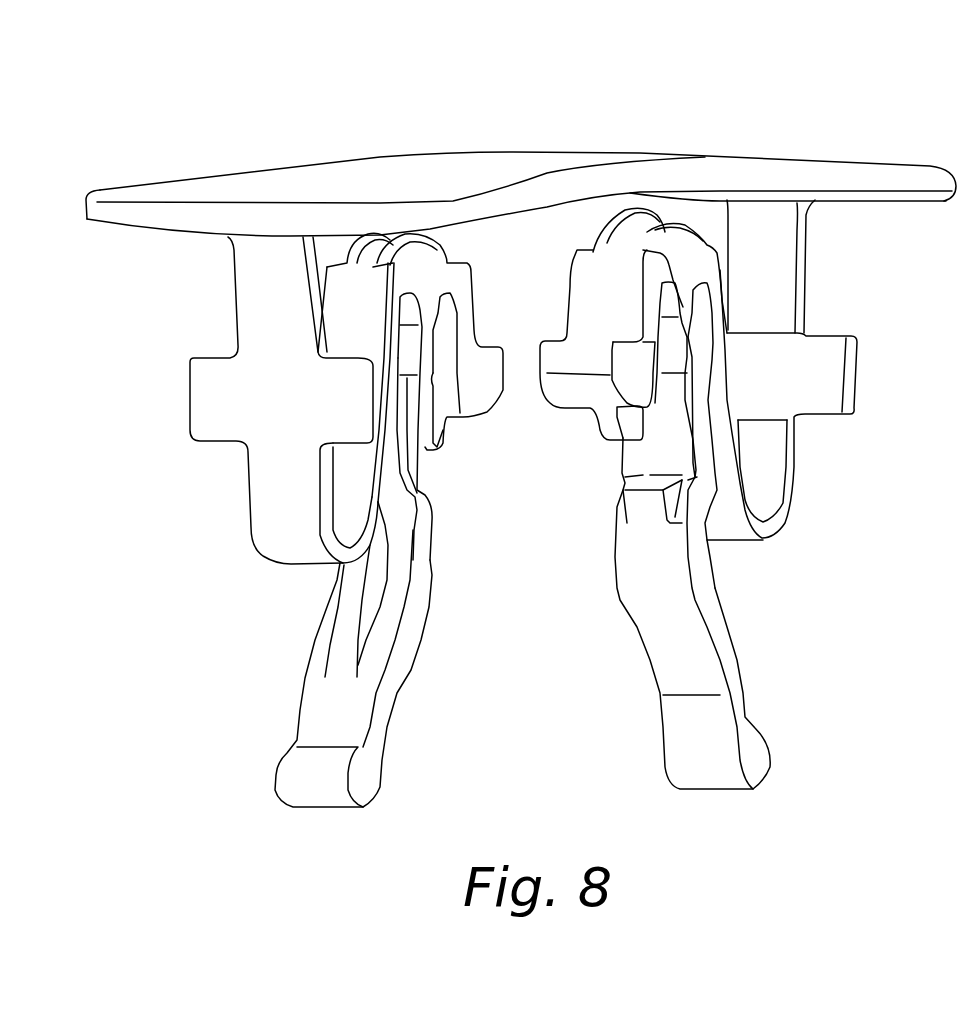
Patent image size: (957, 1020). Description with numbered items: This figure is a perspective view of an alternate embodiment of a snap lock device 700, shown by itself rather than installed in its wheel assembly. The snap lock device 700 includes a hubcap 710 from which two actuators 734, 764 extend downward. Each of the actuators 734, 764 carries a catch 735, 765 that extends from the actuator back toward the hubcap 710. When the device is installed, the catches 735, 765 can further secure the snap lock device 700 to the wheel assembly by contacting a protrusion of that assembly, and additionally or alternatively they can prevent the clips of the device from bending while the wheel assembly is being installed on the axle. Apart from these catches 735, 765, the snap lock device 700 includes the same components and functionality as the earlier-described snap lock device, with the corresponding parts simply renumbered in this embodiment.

The snap lock device 700 is at (773, 108).
The hubcap 710 is at (508, 152).
The actuator 734 is at (323, 720).
The catch 735 is at (427, 497).
The actuator 764 is at (743, 704).
The catch 765 is at (641, 500).